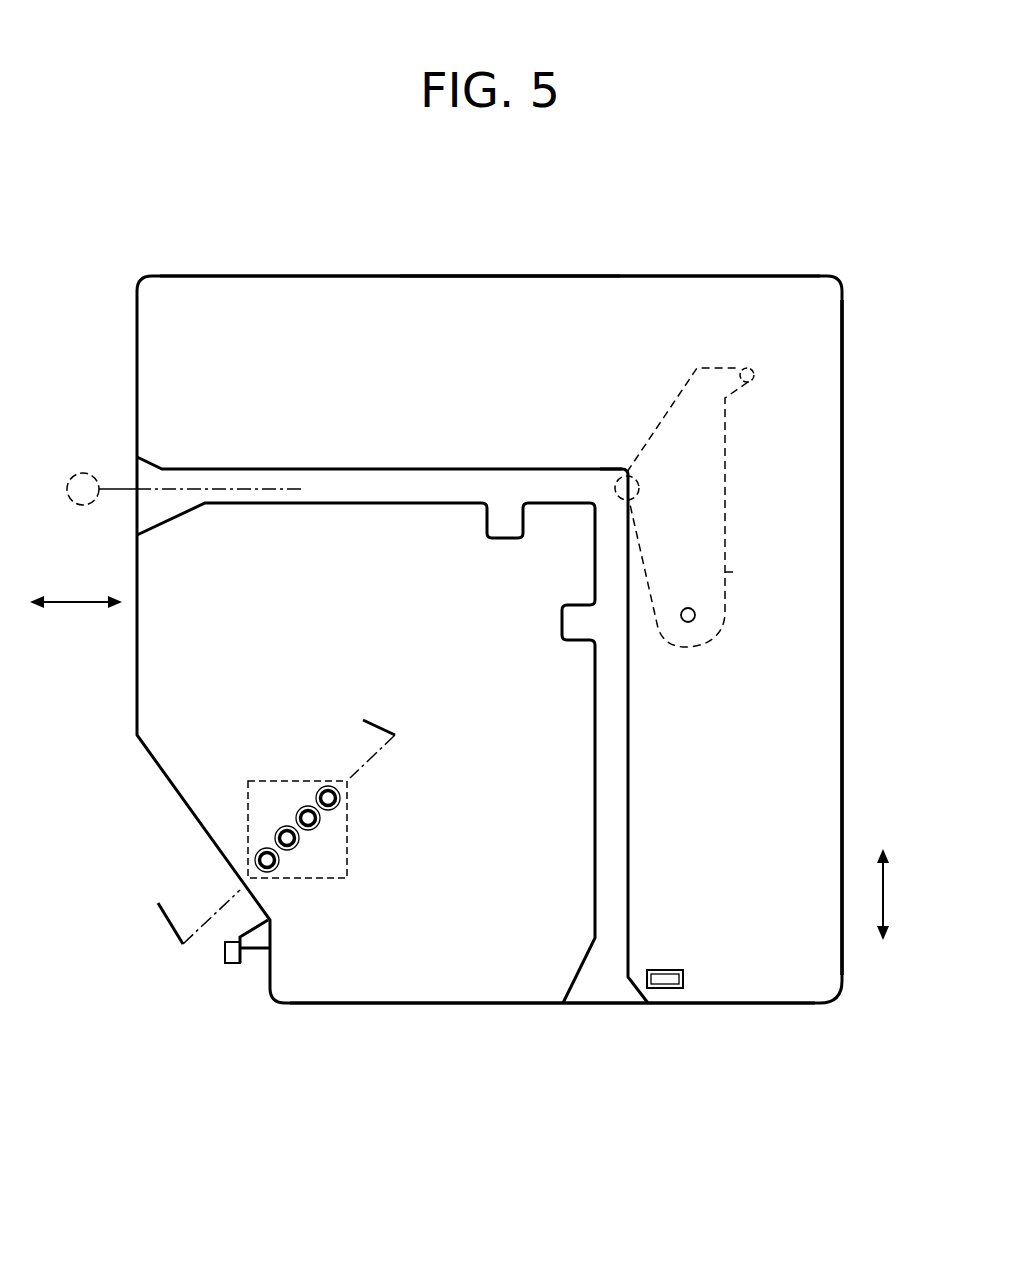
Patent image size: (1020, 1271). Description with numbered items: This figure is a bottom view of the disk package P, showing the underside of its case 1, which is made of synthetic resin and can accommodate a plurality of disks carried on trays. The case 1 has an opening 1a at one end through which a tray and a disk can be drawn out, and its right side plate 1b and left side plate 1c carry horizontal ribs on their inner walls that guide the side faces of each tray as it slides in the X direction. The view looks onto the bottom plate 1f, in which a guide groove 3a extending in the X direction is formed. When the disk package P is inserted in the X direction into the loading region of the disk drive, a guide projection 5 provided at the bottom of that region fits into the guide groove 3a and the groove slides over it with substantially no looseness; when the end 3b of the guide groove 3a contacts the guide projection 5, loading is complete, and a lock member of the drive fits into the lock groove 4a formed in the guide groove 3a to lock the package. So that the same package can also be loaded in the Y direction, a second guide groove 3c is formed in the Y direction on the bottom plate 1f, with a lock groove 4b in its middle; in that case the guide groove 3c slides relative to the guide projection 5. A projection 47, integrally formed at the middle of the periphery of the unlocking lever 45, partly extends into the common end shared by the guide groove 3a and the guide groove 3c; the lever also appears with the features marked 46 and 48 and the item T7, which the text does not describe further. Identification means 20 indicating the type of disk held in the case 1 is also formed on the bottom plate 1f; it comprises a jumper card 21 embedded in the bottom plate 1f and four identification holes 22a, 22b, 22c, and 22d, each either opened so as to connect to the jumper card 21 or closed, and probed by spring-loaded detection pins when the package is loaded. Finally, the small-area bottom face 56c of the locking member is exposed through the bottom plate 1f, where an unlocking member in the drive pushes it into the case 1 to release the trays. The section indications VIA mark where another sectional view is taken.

The case 1 is at (658, 261).
The opening 1a is at (845, 591).
The right side plate 1b is at (247, 275).
The left side plate 1c is at (459, 1006).
The bottom plate 1f is at (503, 296).
The guide groove 3a is at (365, 480).
The end of the guide groove 3b is at (607, 476).
The guide groove 3c is at (618, 828).
The lock groove 4a is at (490, 520).
The lock groove 4b is at (565, 623).
The guide projection 5 is at (88, 470).
The identification means 20 is at (321, 892).
The jumper card 21 is at (350, 863).
The identification hole 22a is at (342, 798).
The identification hole 22b is at (321, 818).
The identification hole 22c is at (283, 828).
The identification hole 22d is at (262, 853).
The unlocking lever 45 is at (733, 572).
The lever pivot 46 is at (688, 622).
The projection 47 is at (624, 500).
The lever tip 48 is at (747, 366).
The bottom face of the locking member 56c is at (667, 980).
The terminal T7 is at (232, 960).
The section line VIA is at (258, 808).
The X direction X is at (76, 583).
The Y direction Y is at (895, 894).
The disk package P is at (847, 470).